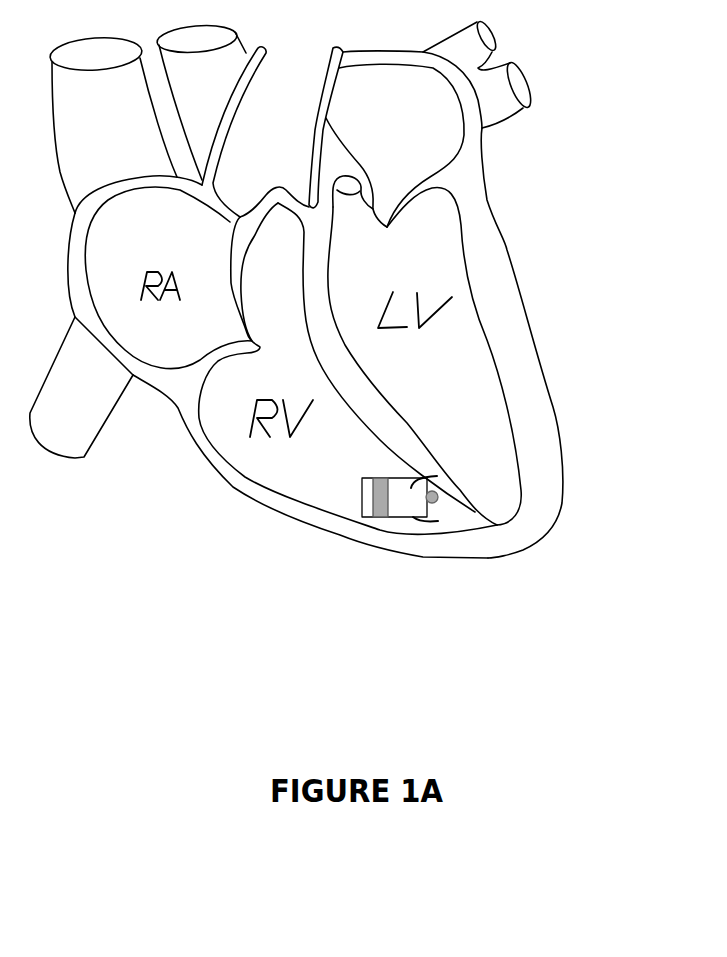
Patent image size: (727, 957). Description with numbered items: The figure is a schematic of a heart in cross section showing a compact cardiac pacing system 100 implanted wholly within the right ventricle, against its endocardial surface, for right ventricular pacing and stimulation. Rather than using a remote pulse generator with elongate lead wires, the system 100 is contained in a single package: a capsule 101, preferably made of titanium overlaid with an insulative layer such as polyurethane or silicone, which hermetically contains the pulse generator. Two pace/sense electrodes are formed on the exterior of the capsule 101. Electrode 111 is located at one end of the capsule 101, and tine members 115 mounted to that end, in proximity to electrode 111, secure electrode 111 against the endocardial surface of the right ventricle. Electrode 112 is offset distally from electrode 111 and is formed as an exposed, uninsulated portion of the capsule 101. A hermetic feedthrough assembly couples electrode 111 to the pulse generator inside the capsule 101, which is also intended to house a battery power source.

The pacing system 100 is at (395, 548).
The capsule 101 is at (398, 517).
The pace/sense electrode 112 is at (382, 517).
The pace/sense electrode 111 is at (437, 493).
The tine members 115 is at (451, 538).